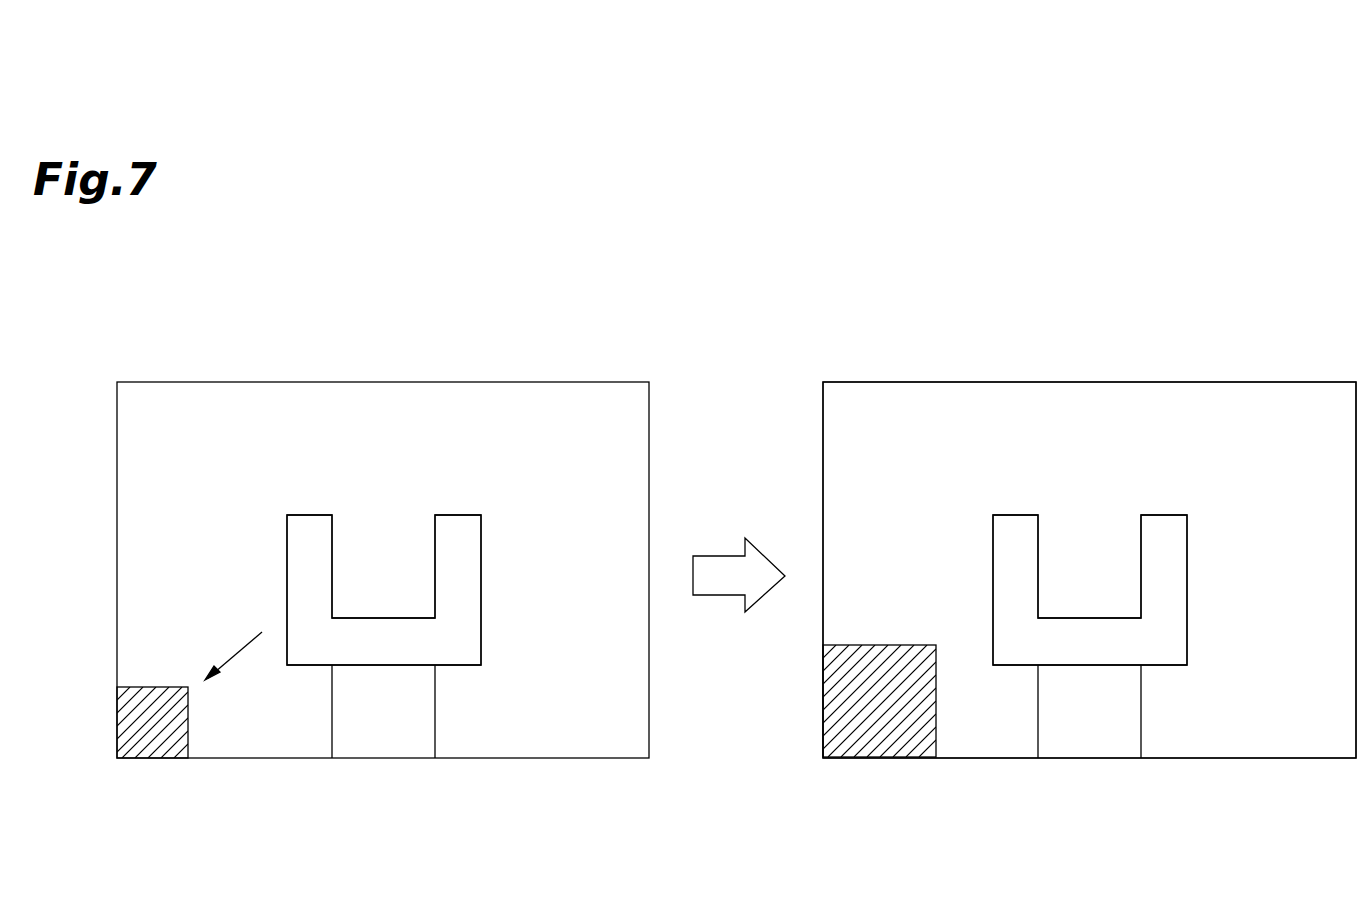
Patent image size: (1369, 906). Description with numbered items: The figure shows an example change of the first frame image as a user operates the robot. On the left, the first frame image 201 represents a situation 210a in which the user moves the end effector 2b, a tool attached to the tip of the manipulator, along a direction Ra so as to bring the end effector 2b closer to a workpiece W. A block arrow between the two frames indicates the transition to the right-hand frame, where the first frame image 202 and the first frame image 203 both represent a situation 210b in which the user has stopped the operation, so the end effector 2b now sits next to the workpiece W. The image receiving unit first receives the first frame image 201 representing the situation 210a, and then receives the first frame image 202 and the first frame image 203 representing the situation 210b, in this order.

The first frame image 201 is at (588, 381).
The first frame image 202 is at (1318, 352).
The first frame image 203 is at (1089, 570).
The situation 210a is at (507, 475).
The situation 210b is at (1213, 475).
The end effector 2b is at (481, 578).
The workpiece W is at (188, 720).
The direction Ra is at (230, 655).